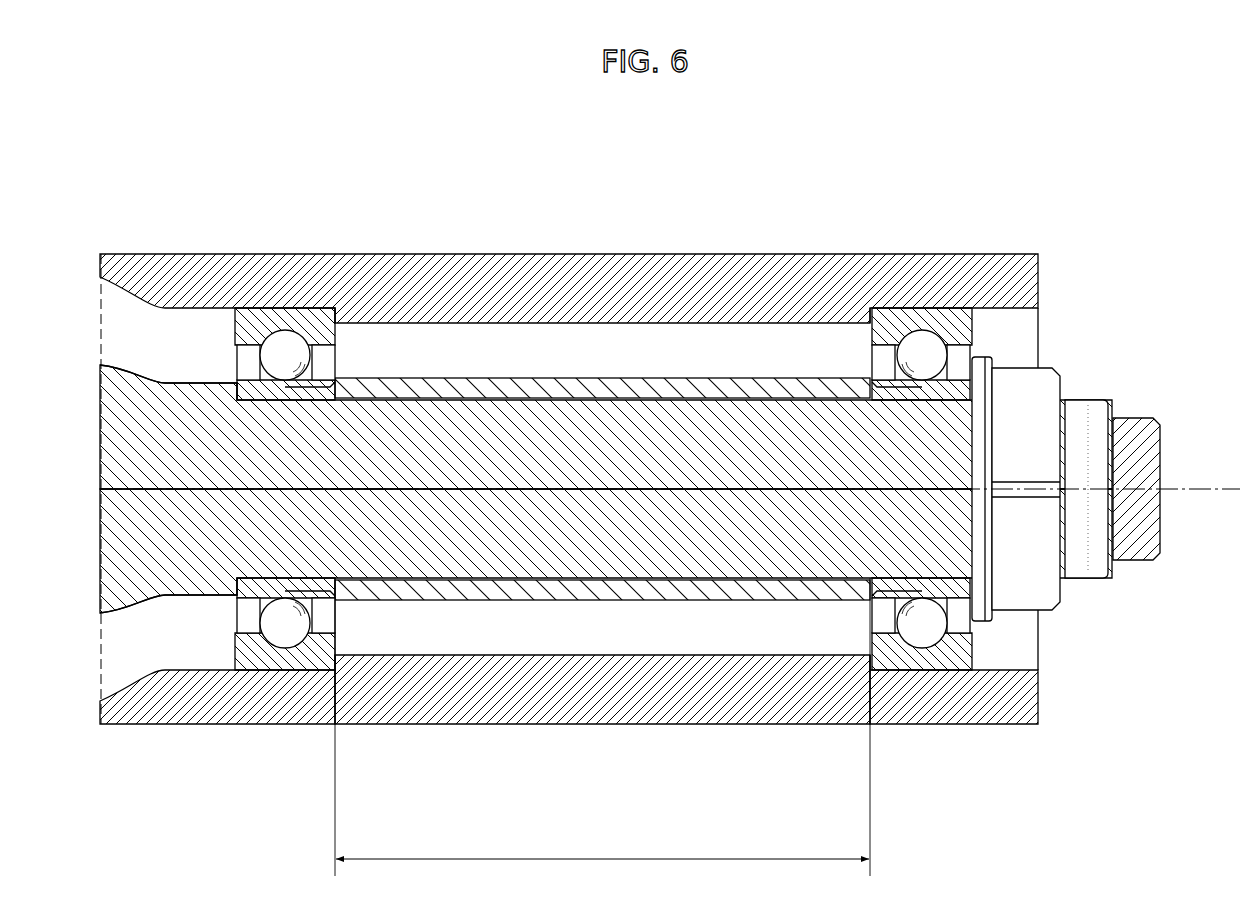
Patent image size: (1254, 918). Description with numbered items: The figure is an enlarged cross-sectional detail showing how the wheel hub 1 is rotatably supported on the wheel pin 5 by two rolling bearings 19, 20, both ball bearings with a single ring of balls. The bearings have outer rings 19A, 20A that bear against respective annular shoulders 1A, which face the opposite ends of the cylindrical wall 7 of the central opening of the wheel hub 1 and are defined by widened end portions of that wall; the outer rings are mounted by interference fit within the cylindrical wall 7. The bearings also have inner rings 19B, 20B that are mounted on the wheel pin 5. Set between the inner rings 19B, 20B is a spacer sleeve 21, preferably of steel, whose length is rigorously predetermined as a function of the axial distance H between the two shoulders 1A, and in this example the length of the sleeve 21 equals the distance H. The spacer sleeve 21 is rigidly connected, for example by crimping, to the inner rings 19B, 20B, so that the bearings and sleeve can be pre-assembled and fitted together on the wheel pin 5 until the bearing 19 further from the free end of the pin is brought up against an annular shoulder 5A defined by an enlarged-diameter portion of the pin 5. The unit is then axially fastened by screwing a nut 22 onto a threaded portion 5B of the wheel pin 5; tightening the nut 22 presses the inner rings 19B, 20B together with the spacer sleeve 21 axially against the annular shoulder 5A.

The wheel hub 1 is at (667, 278).
The annular shoulders 1A is at (330, 316).
The wheel pin 5 is at (662, 503).
The annular shoulder 5A is at (238, 589).
The threaded portion 5B is at (1140, 453).
The cylindrical wall 7 is at (648, 652).
The rolling bearing 19 is at (231, 493).
The outer ring 19A is at (247, 323).
The inner ring 19B is at (258, 390).
The rolling bearing 20 is at (891, 482).
The outer ring 20A is at (962, 322).
The inner ring 20B is at (895, 390).
The spacer sleeve 21 is at (496, 369).
The nut 22 is at (1066, 388).
The axial distance H is at (602, 727).